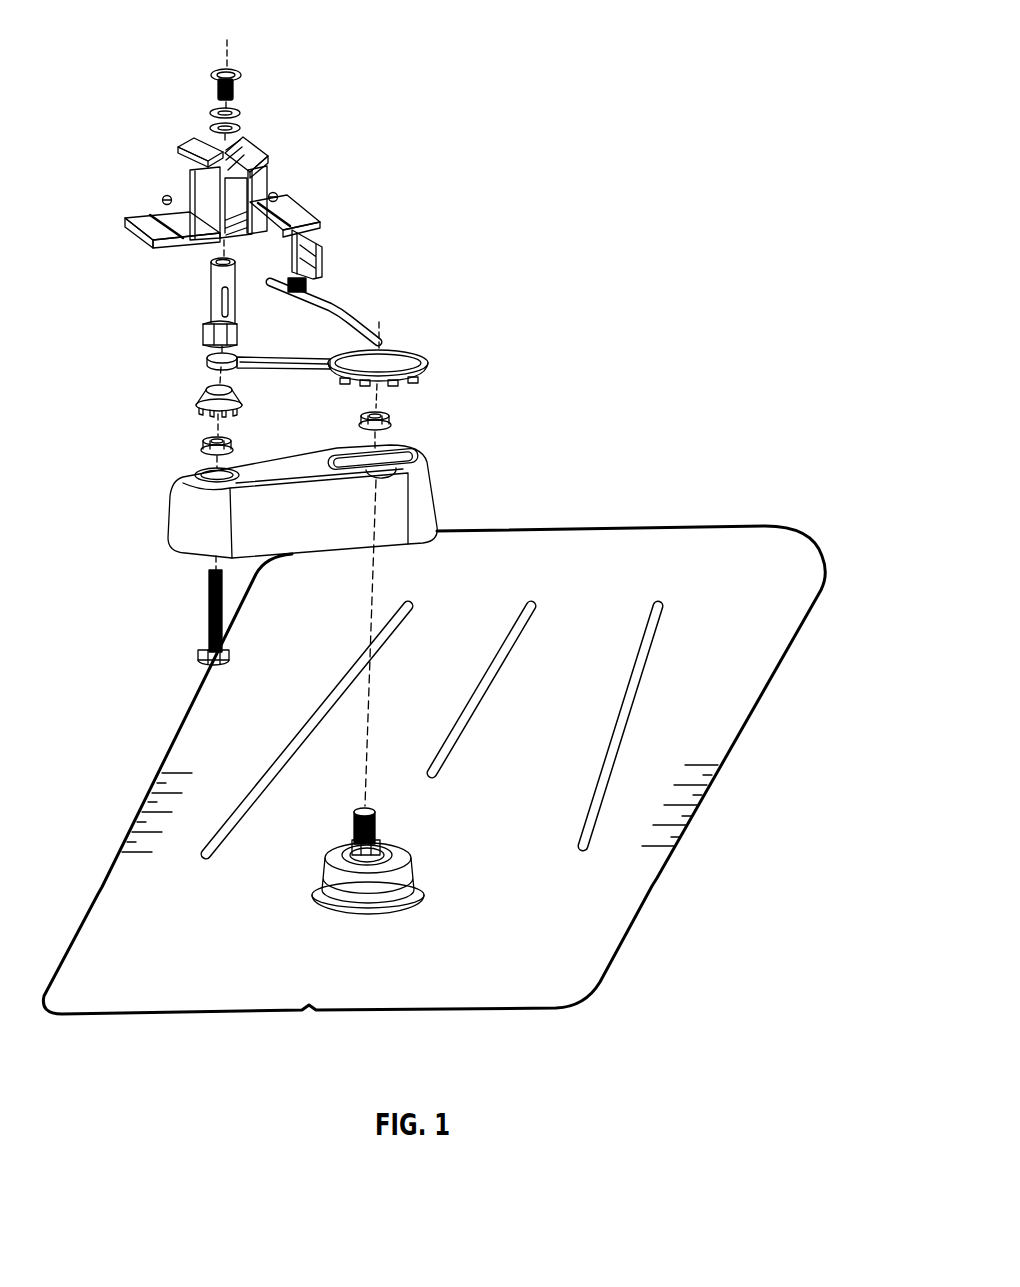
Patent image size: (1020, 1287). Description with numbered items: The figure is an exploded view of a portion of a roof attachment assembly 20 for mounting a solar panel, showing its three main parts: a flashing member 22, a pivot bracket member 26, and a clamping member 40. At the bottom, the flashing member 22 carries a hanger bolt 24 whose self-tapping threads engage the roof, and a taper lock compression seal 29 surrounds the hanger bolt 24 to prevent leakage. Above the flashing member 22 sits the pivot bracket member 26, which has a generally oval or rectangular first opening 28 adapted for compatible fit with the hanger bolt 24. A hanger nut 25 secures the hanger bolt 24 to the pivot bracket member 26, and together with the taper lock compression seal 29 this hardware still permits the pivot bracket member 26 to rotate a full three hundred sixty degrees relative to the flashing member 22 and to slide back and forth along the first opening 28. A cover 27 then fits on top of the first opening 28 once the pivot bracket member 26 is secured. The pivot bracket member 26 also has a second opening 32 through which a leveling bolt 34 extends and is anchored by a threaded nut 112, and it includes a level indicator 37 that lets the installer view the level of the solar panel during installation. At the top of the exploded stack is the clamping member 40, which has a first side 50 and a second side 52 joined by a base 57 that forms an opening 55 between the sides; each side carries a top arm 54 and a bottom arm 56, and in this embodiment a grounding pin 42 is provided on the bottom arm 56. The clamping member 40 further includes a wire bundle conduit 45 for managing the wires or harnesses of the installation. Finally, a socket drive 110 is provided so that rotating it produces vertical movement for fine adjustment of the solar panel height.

The roof attachment assembly 20 is at (537, 466).
The flashing member 22 is at (604, 632).
The hanger bolt 24 is at (375, 815).
The hanger nut 25 is at (390, 412).
The pivot bracket member 26 is at (430, 503).
The cover 27 is at (405, 356).
The first opening 28 is at (405, 455).
The taper lock compression seal 29 is at (398, 855).
The second opening 32 is at (196, 470).
The leveling bolt 34 is at (207, 610).
The level indicator 37 is at (210, 295).
The clamping member 40 is at (400, 197).
The grounding pin 42 is at (167, 193).
The wire bundle conduit 45 is at (318, 252).
The first side 50 is at (193, 143).
The second side 52 is at (247, 133).
The top arm 54 is at (180, 143).
The opening 55 is at (215, 252).
The bottom arm 56 is at (310, 210).
The base 57 is at (233, 249).
The socket drive 110 is at (228, 63).
The threaded nut 112 is at (236, 446).